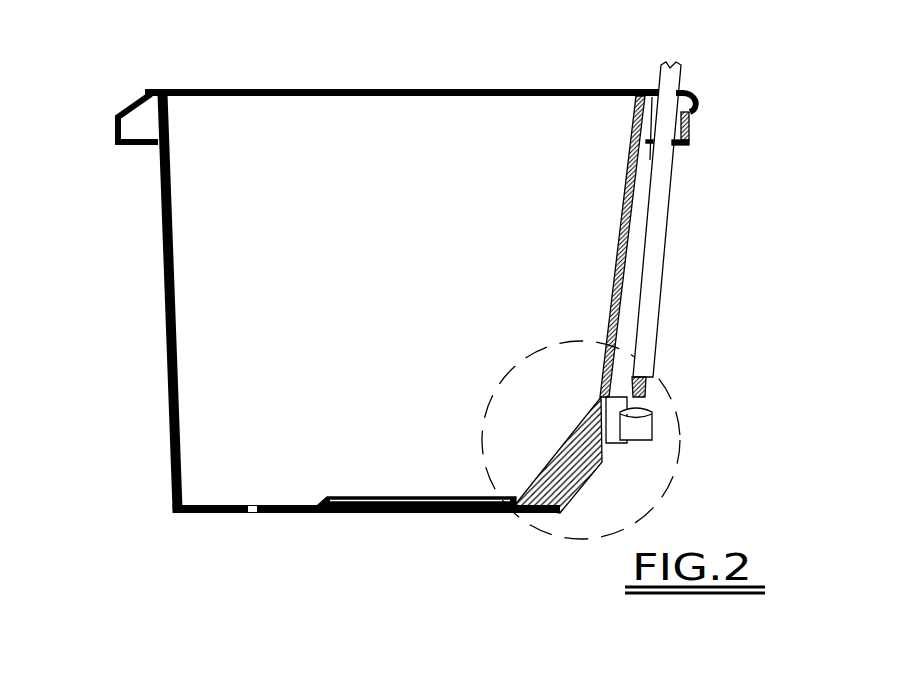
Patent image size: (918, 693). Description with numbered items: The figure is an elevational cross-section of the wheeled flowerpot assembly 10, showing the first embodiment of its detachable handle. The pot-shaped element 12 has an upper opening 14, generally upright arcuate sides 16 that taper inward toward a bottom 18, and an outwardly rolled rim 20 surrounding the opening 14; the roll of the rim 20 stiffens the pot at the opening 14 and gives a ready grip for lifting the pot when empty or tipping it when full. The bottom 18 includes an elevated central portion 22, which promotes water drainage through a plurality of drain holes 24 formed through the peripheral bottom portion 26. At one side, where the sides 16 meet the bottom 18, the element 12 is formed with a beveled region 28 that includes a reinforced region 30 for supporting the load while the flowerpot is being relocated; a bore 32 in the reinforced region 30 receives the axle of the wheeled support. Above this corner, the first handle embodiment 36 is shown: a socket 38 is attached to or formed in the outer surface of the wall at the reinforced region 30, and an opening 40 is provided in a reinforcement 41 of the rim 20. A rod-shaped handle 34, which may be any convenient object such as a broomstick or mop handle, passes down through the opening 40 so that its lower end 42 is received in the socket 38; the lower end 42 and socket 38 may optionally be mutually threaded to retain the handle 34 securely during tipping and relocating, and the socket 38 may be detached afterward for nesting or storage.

The wheeled flowerpot assembly 10 is at (490, 410).
The pot-shaped element 12 is at (158, 315).
The upper opening 14 is at (430, 89).
The sides 16 is at (165, 203).
The bottom 18 is at (375, 513).
The rim 20 is at (146, 90).
The elevated central portion 22 is at (388, 495).
The drain holes 24 is at (258, 514).
The peripheral bottom portion 26 is at (218, 503).
The beveled region 28 is at (587, 498).
The reinforced region 30 is at (578, 423).
The bore 32 is at (570, 440).
The handle 34 is at (665, 222).
The first handle embodiment 36 is at (672, 420).
The socket 38 is at (640, 433).
The opening 40 is at (700, 103).
The reinforcement 41 is at (690, 130).
The lower end 42 is at (650, 392).